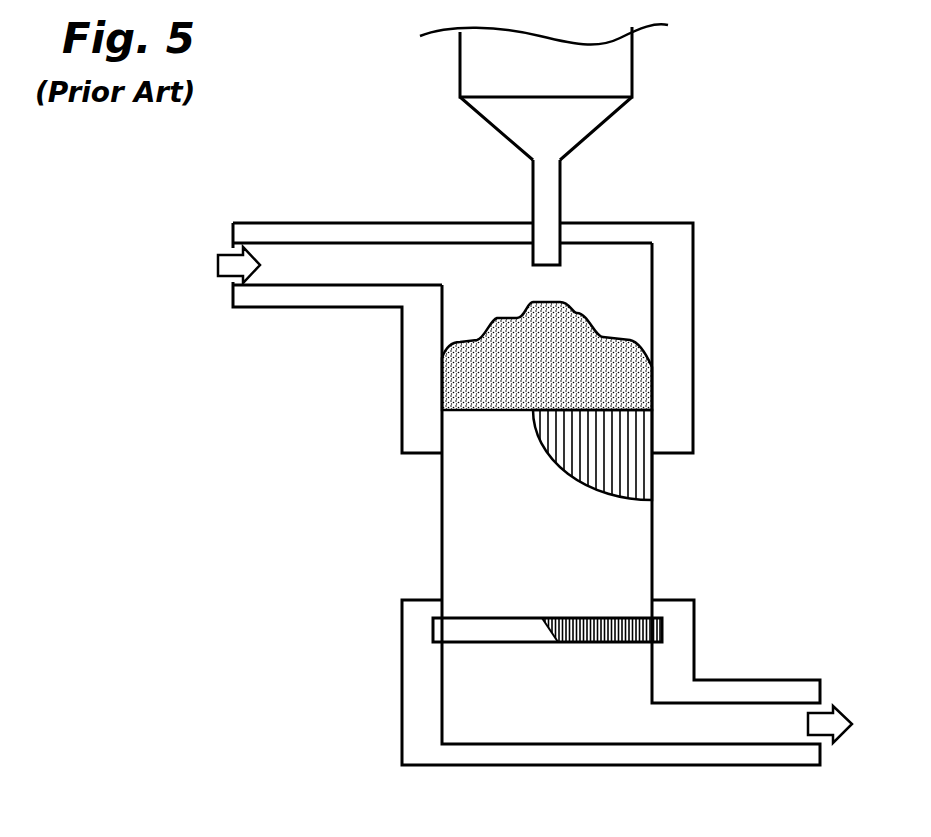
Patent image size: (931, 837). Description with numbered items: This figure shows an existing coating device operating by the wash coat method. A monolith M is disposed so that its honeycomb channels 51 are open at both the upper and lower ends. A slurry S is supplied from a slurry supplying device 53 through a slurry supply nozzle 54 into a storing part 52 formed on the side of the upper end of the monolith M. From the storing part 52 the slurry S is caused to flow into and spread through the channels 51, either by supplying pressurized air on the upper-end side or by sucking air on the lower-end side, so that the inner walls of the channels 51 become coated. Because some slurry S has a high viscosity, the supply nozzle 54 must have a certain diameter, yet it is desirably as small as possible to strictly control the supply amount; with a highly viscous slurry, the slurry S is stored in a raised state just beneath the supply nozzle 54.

The honeycomb channels 51 is at (597, 473).
The storing part 52 is at (497, 280).
The slurry supplying device 53 is at (487, 80).
The slurry supply nozzle 54 is at (552, 256).
The slurry S is at (590, 353).
The monolith M is at (538, 544).